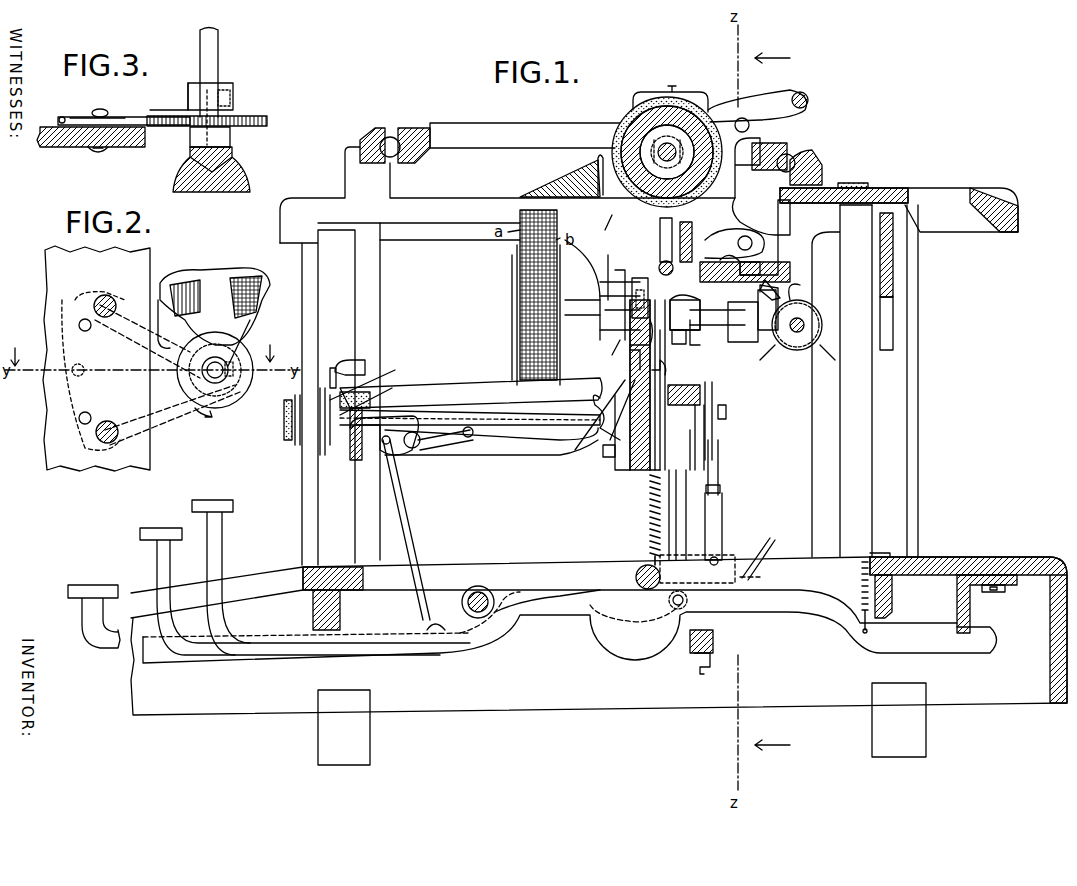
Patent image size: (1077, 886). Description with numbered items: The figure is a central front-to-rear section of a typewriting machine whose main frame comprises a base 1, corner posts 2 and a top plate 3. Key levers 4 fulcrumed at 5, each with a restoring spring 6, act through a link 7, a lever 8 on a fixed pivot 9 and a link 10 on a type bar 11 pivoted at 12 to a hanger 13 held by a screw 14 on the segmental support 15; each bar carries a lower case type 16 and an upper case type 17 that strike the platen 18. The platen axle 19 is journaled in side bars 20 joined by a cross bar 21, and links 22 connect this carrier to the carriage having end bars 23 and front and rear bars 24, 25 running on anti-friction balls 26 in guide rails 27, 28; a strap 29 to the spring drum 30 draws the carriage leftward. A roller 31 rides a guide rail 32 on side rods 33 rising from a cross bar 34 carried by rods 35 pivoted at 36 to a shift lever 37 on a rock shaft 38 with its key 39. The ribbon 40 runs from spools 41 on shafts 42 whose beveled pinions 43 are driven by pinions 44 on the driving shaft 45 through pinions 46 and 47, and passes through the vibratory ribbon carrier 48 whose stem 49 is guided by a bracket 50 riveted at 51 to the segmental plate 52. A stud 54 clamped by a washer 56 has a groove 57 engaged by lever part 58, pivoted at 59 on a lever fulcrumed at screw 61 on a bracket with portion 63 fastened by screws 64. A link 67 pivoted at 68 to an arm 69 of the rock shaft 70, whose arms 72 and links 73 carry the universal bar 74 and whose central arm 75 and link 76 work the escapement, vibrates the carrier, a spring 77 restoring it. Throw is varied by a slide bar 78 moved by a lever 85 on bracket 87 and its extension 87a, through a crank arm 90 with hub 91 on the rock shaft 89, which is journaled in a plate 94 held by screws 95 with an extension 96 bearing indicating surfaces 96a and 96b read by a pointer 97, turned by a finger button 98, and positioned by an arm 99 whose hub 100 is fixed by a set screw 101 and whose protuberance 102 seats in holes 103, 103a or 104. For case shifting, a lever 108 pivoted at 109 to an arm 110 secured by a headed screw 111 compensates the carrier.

In FIG. 1, the base 1 is at (537, 700).
In FIG. 3, the corner posts 2 is at (145, 137).
In FIG. 2, the corner posts 2 is at (150, 455).
In FIG. 1, the corner posts 2 is at (930, 465).
In FIG. 1, the top plate 3 is at (990, 190).
In FIG. 1, the key levers 4 is at (795, 617).
In FIG. 1, the fulcrum 5 is at (970, 605).
In FIG. 1, the restoring spring 6 is at (872, 605).
In FIG. 1, the link 7 is at (405, 512).
In FIG. 1, the lever 8 is at (458, 438).
In FIG. 1, the fixed pivot 9 is at (410, 450).
In FIG. 1, the link 10 is at (530, 450).
In FIG. 1, the type bar 11 is at (420, 390).
In FIG. 1, the pivot 12 is at (598, 404).
In FIG. 1, the hanger 13 is at (615, 468).
In FIG. 1, the screw 14 is at (603, 450).
In FIG. 1, the segmental support 15 is at (640, 470).
In FIG. 1, the lower case type 16 is at (360, 362).
In FIG. 1, the upper case type 17 is at (332, 368).
In FIG. 1, the platen 18 is at (622, 123).
In FIG. 1, the axle 19 is at (669, 150).
In FIG. 1, the side bars 20 is at (760, 195).
In FIG. 1, the cross bar 21 is at (692, 255).
In FIG. 1, the links 22 is at (735, 242).
In FIG. 1, the end bars 23 is at (535, 123).
In FIG. 1, the front bar 24 is at (405, 160).
In FIG. 1, the rear bar 25 is at (770, 143).
In FIG. 1, the anti-friction balls 26 is at (812, 143).
In FIG. 1, the front guide rail 27 is at (365, 130).
In FIG. 1, the rear guide rail 28 is at (815, 155).
In FIG. 1, the strap 29 is at (856, 183).
In FIG. 1, the spring drum 30 is at (840, 455).
In FIG. 1, the roller 31 is at (645, 225).
In FIG. 1, the guide rail 32 is at (760, 262).
In FIG. 1, the side rods 33 is at (700, 270).
In FIG. 1, the cross bar 34 is at (700, 392).
In FIG. 1, the supporting rods 35 is at (690, 492).
In FIG. 1, the pivot 36 is at (686, 603).
In FIG. 1, the shift lever 37 is at (638, 648).
In FIG. 1, the rock shaft 38 is at (484, 594).
In FIG. 1, the shift key 39 is at (88, 590).
In FIG. 1, the ribbon 40 is at (546, 180).
In FIG. 1, the ribbon spools 41 is at (517, 290).
In FIG. 1, the horizontal shaft 42 is at (580, 300).
In FIG. 1, the beveled pinion 43 is at (770, 345).
In FIG. 1, the beveled driving pinion 44 is at (776, 320).
In FIG. 1, the driving shaft 45 is at (797, 318).
In FIG. 1, the beveled pinion 46 is at (836, 338).
In FIG. 1, the beveled pinion 47 is at (805, 347).
In FIG. 1, the vibratory ribbon carrier 48 is at (598, 250).
In FIG. 1, the stem 49 is at (660, 440).
In FIG. 1, the bracket 50 is at (638, 288).
In FIG. 1, the rivets 51 is at (615, 292).
In FIG. 1, the segmental plate 52 is at (610, 352).
In FIG. 1, the stud 54 is at (630, 345).
In FIG. 1, the washer 56 is at (652, 370).
In FIG. 1, the circumferential groove 57 is at (575, 450).
In FIG. 1, the lever part 58 is at (610, 440).
In FIG. 1, the pivot 59 is at (630, 352).
In FIG. 1, the fulcrum screw 61 is at (735, 310).
In FIG. 1, the bracket portion 63 is at (612, 262).
In FIG. 1, the screws 64 is at (598, 312).
In FIG. 1, the link 67 is at (735, 462).
In FIG. 1, the pivot 68 is at (735, 522).
In FIG. 1, the arm 69 is at (669, 540).
In FIG. 1, the rock shaft 70 is at (638, 575).
In FIG. 1, the arms 72 is at (762, 577).
In FIG. 1, the links 73 is at (702, 672).
In FIG. 1, the universal bar 74 is at (713, 636).
In FIG. 1, the central arm 75 is at (735, 598).
In FIG. 1, the link 76 is at (775, 545).
In FIG. 1, the spring 77 is at (650, 525).
In FIG. 1, the slide bar 78 is at (690, 305).
In FIG. 1, the lever 85 is at (700, 340).
In FIG. 1, the bracket 87 is at (695, 338).
In FIG. 1, the extended part 87a is at (700, 440).
In FIG. 3, the rock shaft 89 is at (228, 42).
In FIG. 2, the rock shaft 89 is at (218, 375).
In FIG. 1, the rock shaft 89 is at (455, 414).
In FIG. 1, the crank arm 90 is at (712, 395).
In FIG. 1, the hub 91 is at (726, 412).
In FIG. 3, the plate 94 is at (250, 116).
In FIG. 2, the plate 94 is at (170, 400).
In FIG. 1, the plate 94 is at (322, 455).
In FIG. 3, the screws 95 is at (98, 152).
In FIG. 2, the screws 95 is at (135, 410).
In FIG. 1, the screws 95 is at (285, 452).
In FIG. 2, the upward extension 96 is at (215, 280).
In FIG. 1, the upward extension 96 is at (345, 392).
In FIG. 2, the indicating surface 96a is at (250, 280).
In FIG. 2, the indicating surface 96b is at (178, 290).
In FIG. 3, the pointer 97 is at (232, 130).
In FIG. 2, the pointer 97 is at (240, 336).
In FIG. 1, the pointer 97 is at (330, 420).
In FIG. 3, the finger button 98 is at (238, 158).
In FIG. 1, the finger button 98 is at (284, 415).
In FIG. 3, the arm 99 is at (120, 118).
In FIG. 2, the arm 99 is at (160, 342).
In FIG. 1, the arm 99 is at (368, 372).
In FIG. 3, the hub portion 100 is at (185, 95).
In FIG. 1, the hub portion 100 is at (350, 440).
In FIG. 3, the set screw 101 is at (232, 95).
In FIG. 2, the set screw 101 is at (236, 368).
In FIG. 1, the set screw 101 is at (376, 390).
In FIG. 3, the rounded protuberance 102 is at (90, 112).
In FIG. 3, the hole 103 is at (62, 115).
In FIG. 2, the hole 103 is at (91, 325).
In FIG. 2, the hole 103a is at (84, 370).
In FIG. 2, the hole 104 is at (88, 412).
In FIG. 1, the lever 108 is at (600, 330).
In FIG. 1, the pivot 109 is at (745, 300).
In FIG. 1, the arm 110 is at (668, 368).
In FIG. 1, the headed screw 111 is at (704, 405).